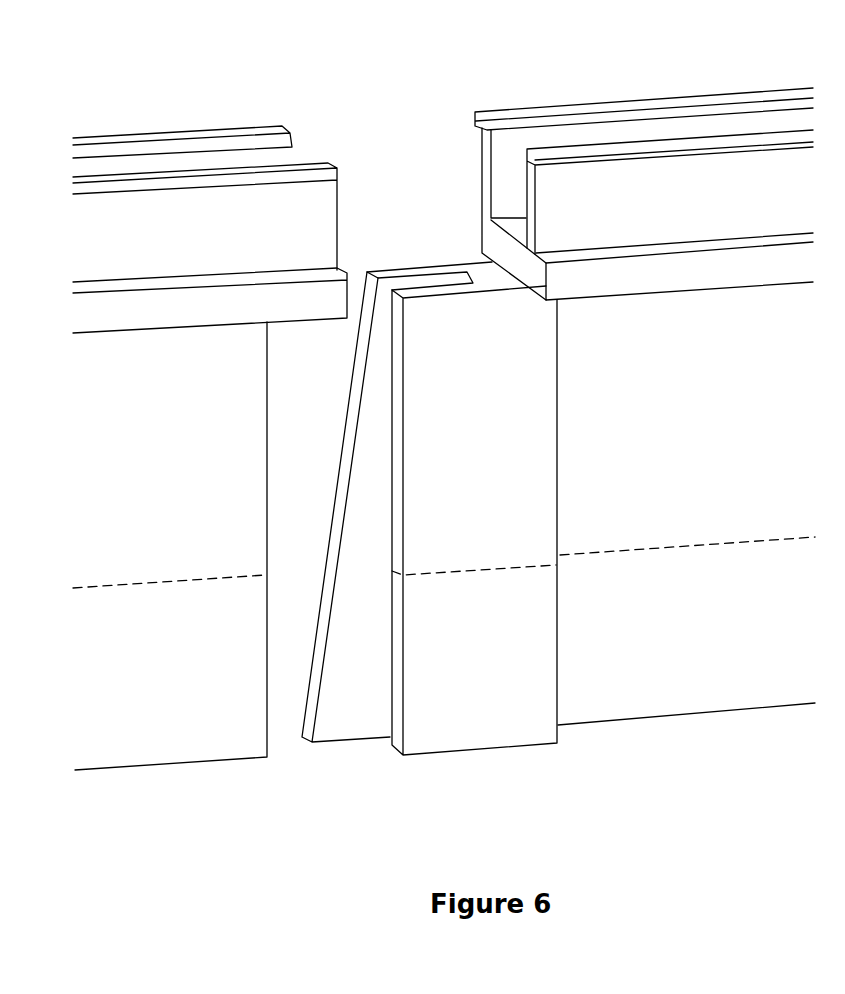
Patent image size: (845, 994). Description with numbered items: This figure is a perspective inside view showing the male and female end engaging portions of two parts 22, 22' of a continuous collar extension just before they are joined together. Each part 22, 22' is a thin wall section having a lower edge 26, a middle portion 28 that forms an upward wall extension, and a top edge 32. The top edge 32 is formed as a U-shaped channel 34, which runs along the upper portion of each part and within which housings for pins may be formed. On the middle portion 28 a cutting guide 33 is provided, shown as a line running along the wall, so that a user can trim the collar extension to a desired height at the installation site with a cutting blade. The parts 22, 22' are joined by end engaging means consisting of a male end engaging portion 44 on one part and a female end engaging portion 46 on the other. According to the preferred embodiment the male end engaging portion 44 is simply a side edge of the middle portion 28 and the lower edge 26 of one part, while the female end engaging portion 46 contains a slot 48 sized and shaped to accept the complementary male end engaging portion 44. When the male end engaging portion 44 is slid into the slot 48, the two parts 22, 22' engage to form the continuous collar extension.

The part of the continuous collar extension 22 is at (171, 581).
The part of the continuous collar extension 22' is at (686, 560).
The lower edge 26 is at (118, 769).
The middle portion 28 is at (101, 511).
The top edge 32 is at (213, 127).
The cutting guide 33 is at (173, 585).
The U-shaped channel 34 is at (593, 138).
The male end engaging portion 44 is at (268, 715).
The female end engaging portion 46 is at (465, 715).
The slot 48 is at (412, 508).